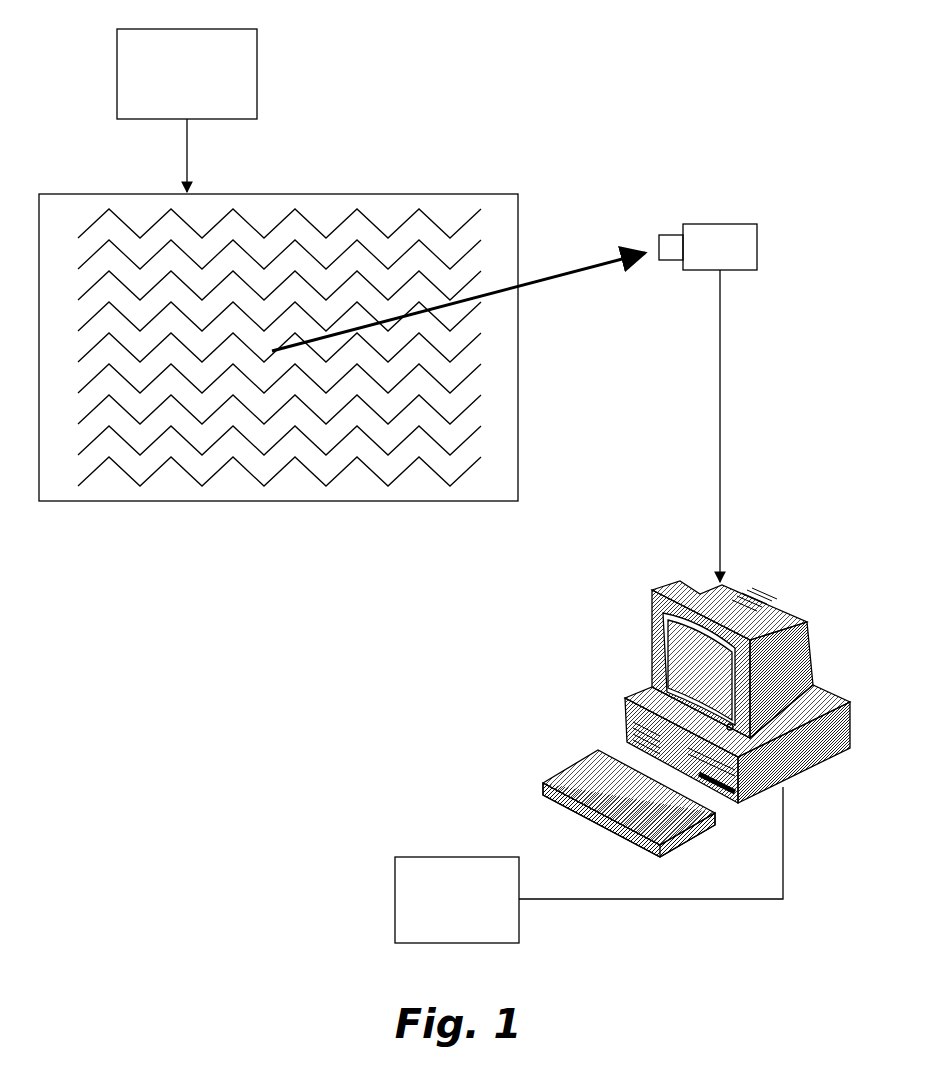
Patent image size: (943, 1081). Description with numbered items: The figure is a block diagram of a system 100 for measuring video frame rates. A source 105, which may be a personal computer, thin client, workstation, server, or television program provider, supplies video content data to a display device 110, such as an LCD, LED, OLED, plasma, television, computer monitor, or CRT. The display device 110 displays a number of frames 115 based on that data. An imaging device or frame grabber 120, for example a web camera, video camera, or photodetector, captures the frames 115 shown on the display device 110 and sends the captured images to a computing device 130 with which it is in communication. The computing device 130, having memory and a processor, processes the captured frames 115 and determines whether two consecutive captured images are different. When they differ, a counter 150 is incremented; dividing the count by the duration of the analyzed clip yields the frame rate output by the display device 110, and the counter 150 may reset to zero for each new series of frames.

The system 100 is at (458, 78).
The source 105 is at (187, 110).
The display device 110 is at (417, 488).
The frames 115 is at (238, 468).
The imaging device or frame grabber 120 is at (720, 243).
The computing device 130 is at (680, 657).
The counter 150 is at (589, 865).